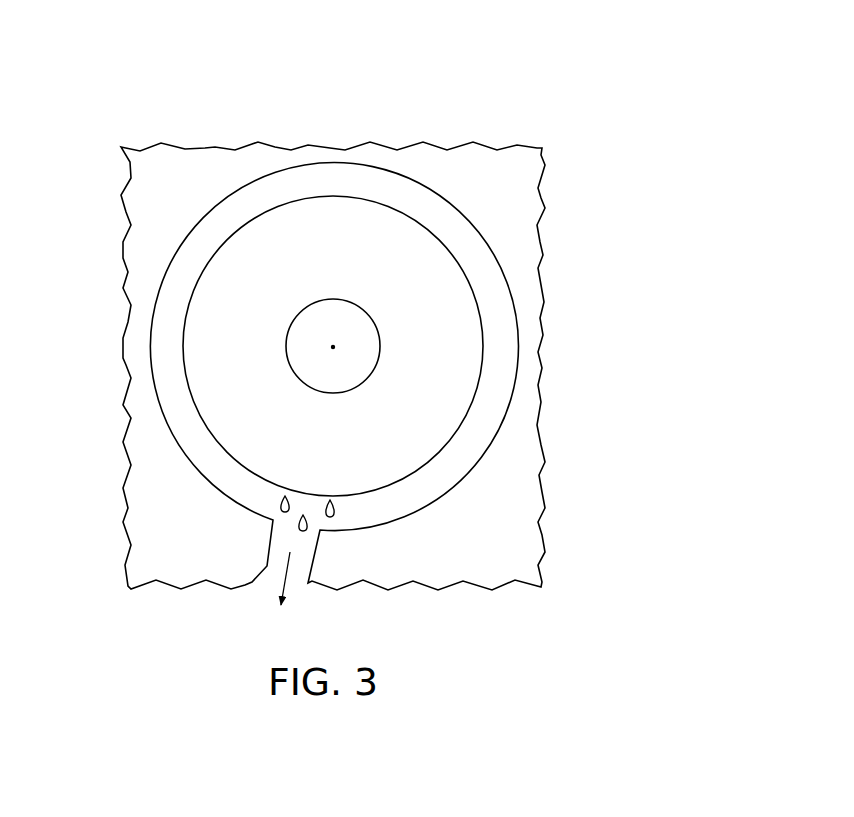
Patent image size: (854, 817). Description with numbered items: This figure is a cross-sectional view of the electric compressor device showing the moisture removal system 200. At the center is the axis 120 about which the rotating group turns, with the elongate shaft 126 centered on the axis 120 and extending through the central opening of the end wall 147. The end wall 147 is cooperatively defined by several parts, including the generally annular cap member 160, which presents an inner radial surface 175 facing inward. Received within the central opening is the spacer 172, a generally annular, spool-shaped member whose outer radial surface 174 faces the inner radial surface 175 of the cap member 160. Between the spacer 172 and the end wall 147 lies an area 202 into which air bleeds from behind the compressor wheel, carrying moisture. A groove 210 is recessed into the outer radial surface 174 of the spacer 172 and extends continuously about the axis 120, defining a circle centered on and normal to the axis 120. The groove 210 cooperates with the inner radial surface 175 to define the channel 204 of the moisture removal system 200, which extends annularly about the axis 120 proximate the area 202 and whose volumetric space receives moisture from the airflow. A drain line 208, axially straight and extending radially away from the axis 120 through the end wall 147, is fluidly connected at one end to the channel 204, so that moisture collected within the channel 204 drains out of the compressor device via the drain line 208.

The moisture removal system 200 is at (123, 99).
The area 202 is at (228, 189).
The end wall 147 is at (516, 164).
The cap member 160 is at (538, 201).
The inner radial surface 175 is at (330, 168).
The outer radial surface 174 is at (337, 197).
The spacer 172 is at (433, 253).
The channel 204 is at (491, 418).
The groove 210 is at (509, 345).
The axis 120 is at (331, 347).
The shaft 126 is at (334, 390).
The drain line 208 is at (265, 567).